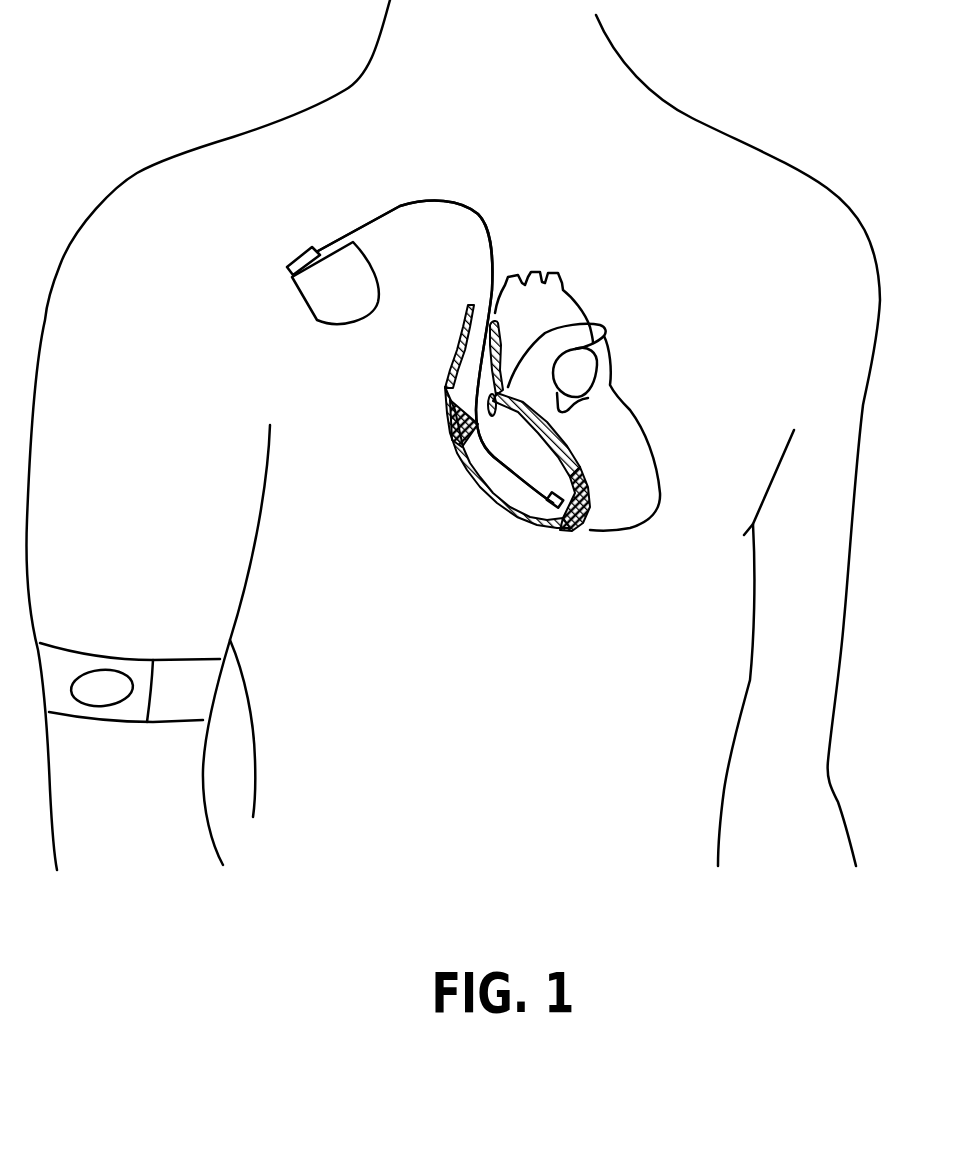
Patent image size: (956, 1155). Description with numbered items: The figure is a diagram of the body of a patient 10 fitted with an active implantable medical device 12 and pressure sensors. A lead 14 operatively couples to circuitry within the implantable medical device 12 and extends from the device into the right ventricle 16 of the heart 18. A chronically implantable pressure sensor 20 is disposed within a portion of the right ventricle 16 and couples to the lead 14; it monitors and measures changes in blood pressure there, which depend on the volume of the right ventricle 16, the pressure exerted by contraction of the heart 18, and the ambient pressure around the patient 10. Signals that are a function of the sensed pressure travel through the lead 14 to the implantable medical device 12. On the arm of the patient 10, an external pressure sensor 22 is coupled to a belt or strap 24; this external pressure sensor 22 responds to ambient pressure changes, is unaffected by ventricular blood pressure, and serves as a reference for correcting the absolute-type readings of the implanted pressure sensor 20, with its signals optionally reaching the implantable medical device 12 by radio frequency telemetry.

The patient 10 is at (803, 165).
The implantable medical device 12 is at (300, 310).
The lead 14 is at (453, 410).
The right ventricle 16 is at (495, 484).
The heart 18 is at (660, 488).
The pressure sensor 20 is at (583, 532).
The external pressure sensor 22 is at (92, 698).
The belt or strap 24 is at (200, 688).